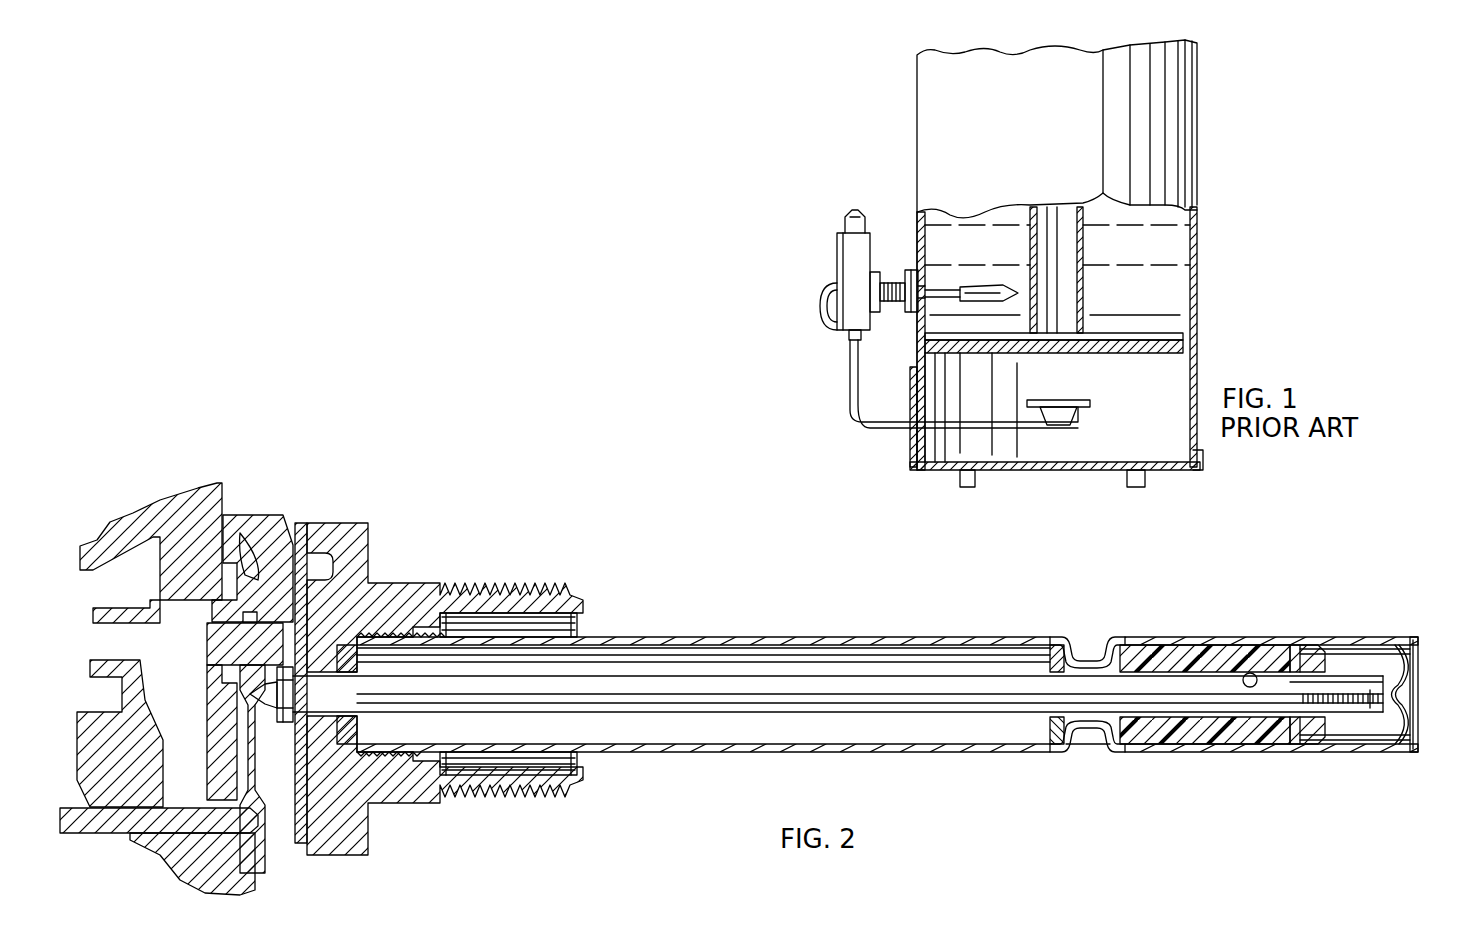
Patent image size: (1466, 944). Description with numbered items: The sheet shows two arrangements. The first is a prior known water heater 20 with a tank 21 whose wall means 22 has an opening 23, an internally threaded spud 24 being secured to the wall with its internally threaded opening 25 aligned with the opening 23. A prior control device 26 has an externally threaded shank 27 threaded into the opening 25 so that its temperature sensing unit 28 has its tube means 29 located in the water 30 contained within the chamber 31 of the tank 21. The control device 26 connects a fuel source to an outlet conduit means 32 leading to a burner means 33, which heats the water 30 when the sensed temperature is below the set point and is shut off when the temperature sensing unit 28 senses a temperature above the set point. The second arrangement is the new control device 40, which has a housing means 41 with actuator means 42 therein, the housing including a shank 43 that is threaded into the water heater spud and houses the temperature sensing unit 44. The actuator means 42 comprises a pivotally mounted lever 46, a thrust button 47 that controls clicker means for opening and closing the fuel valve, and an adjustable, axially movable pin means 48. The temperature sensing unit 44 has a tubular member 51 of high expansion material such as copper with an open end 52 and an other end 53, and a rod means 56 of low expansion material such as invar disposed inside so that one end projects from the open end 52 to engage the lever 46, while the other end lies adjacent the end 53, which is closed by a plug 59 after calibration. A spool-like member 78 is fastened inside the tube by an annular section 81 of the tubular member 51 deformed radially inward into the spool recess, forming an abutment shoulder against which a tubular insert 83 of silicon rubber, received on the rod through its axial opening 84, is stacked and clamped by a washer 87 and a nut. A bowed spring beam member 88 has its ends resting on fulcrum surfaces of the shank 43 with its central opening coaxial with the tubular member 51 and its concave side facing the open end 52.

In FIG. 1, the water heater 20 is at (1247, 94).
In FIG. 1, the tank 21 is at (930, 75).
In FIG. 1, the wall means 22 is at (917, 212).
In FIG. 1, the opening 23 is at (940, 284).
In FIG. 1, the internally threaded spud 24 is at (910, 312).
In FIG. 1, the internally threaded opening 25 is at (897, 282).
In FIG. 1, the control device 26 is at (837, 250).
In FIG. 1, the externally threaded shank 27 is at (905, 302).
In FIG. 1, the temperature sensing unit 28 is at (985, 304).
In FIG. 1, the tube means 29 is at (1000, 290).
In FIG. 1, the water 30 is at (1165, 291).
In FIG. 1, the chamber 31 is at (1160, 246).
In FIG. 1, the outlet conduit means 32 is at (880, 432).
In FIG. 1, the burner means 33 is at (1078, 400).
In FIG. 2, the control device 40 is at (424, 506).
In FIG. 2, the housing means 41 is at (198, 488).
In FIG. 2, the actuator means 42 is at (192, 603).
In FIG. 2, the shank 43 is at (405, 590).
In FIG. 2, the temperature sensing unit 44 is at (540, 554).
In FIG. 2, the pivotally mounted lever 46 is at (210, 692).
In FIG. 2, the thrust button 47 is at (212, 641).
In FIG. 2, the pin means 48 is at (85, 835).
In FIG. 2, the tubular member 51 is at (738, 637).
In FIG. 2, the open end 52 is at (357, 747).
In FIG. 2, the other end 53 is at (1383, 637).
In FIG. 2, the rod means 56 is at (905, 675).
In FIG. 2, the plug 59 is at (1410, 690).
In FIG. 2, the spool-like member 78 is at (1082, 662).
In FIG. 2, the annular section 81 is at (1090, 750).
In FIG. 2, the insert 83 is at (1185, 650).
In FIG. 2, the axial opening 84 is at (1251, 673).
In FIG. 2, the washer 87 is at (1291, 644).
In FIG. 2, the spring beam member 88 is at (300, 523).